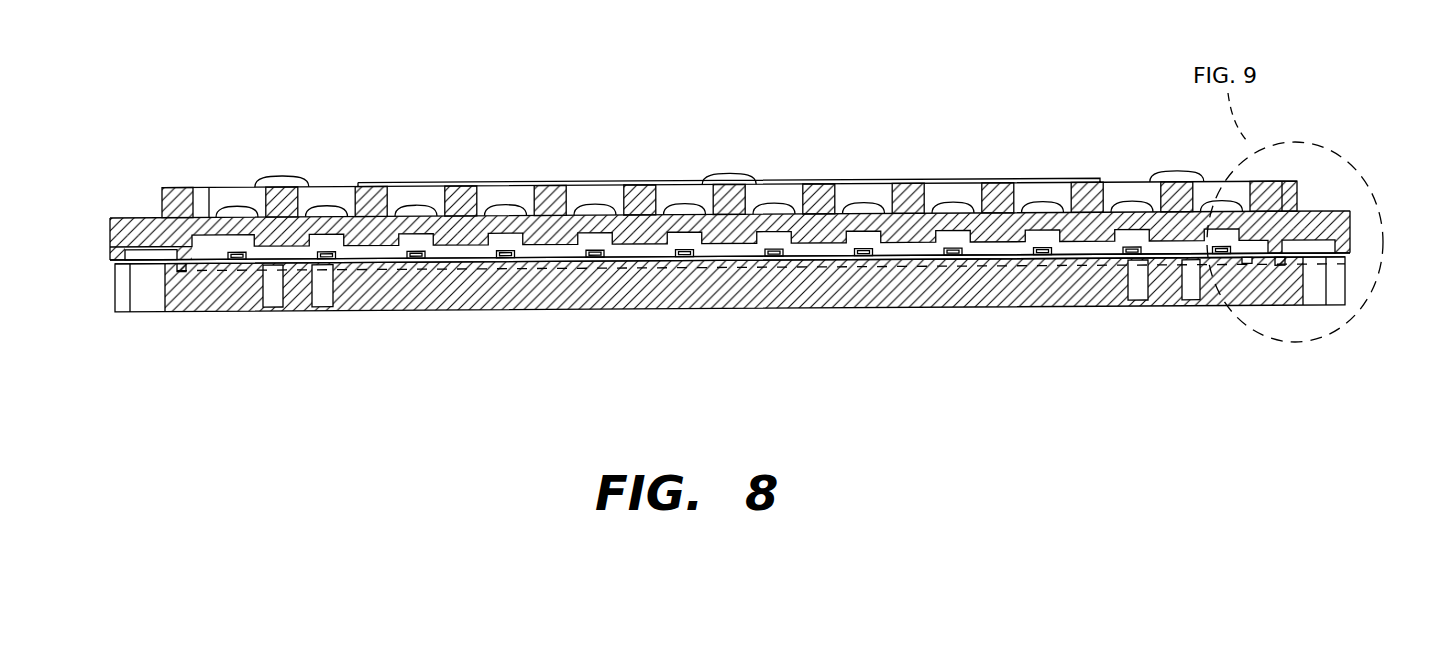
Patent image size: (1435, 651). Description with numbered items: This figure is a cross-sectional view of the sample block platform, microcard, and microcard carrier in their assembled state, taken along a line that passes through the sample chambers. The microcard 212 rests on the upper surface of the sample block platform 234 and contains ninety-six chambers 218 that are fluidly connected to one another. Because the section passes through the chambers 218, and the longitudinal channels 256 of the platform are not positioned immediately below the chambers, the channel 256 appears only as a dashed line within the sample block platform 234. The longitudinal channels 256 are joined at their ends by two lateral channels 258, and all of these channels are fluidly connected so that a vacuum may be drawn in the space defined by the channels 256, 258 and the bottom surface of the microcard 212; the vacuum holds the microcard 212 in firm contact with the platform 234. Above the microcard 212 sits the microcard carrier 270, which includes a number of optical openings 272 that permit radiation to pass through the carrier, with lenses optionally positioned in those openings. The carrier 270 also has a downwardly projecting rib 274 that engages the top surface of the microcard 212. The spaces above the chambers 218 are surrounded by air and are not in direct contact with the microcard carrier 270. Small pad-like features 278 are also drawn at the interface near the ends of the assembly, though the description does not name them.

The microcard 212 is at (472, 262).
The chambers 218 is at (234, 252).
The sample block platform 234 is at (630, 290).
The longitudinal channels 256 is at (965, 275).
The lateral channels 258 is at (1248, 262).
The microcard carrier 270 is at (1292, 215).
The optical openings 272 is at (322, 200).
The downwardly projecting rib 274 is at (1272, 246).
The contact pads 278 is at (181, 270).